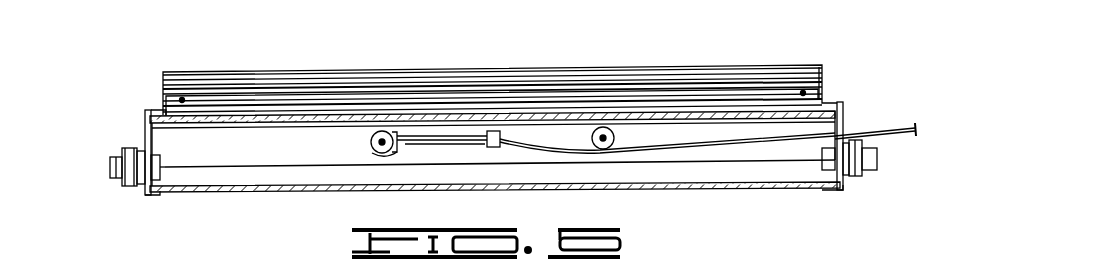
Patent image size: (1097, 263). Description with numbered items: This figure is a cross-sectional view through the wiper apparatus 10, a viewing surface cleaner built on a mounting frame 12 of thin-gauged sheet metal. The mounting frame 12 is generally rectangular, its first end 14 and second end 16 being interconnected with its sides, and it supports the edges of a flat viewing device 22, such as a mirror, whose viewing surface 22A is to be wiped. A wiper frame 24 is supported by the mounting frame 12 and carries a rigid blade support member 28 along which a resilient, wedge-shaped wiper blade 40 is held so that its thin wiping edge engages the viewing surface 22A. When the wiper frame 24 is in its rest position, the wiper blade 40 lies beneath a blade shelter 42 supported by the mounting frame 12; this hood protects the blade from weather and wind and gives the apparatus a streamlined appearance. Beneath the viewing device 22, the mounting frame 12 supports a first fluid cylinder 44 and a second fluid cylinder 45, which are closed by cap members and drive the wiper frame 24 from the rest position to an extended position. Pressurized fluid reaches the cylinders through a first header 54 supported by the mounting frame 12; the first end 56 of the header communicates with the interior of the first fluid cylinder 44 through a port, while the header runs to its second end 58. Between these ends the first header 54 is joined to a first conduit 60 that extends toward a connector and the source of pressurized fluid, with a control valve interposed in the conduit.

The wiper apparatus 10 is at (172, 60).
The mounting frame 12 is at (302, 187).
The first end 14 is at (842, 118).
The second end 16 is at (145, 118).
The viewing device 22 is at (262, 127).
The viewing surface 22A is at (222, 117).
The wiper frame 24 is at (277, 92).
The blade support member 28 is at (333, 100).
The wiper blade 40 is at (178, 112).
The blade shelter 42 is at (462, 69).
The first fluid cylinder 44 is at (617, 138).
The second fluid cylinder 45 is at (370, 141).
The first header 54 is at (437, 140).
The first end of first header 56 is at (575, 157).
The second end of first header 58 is at (392, 158).
The first conduit 60 is at (744, 143).